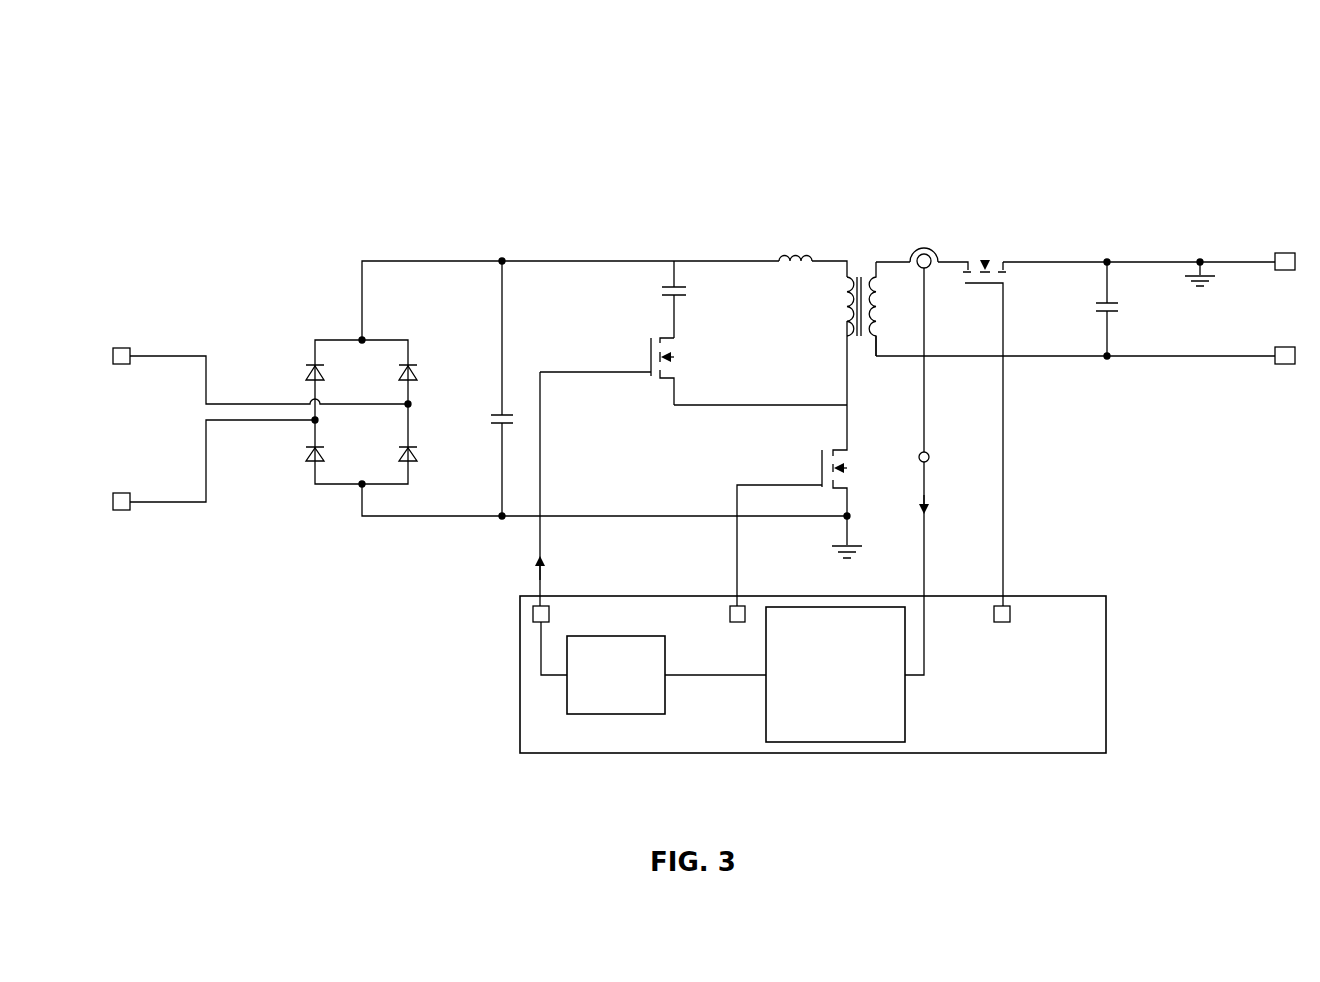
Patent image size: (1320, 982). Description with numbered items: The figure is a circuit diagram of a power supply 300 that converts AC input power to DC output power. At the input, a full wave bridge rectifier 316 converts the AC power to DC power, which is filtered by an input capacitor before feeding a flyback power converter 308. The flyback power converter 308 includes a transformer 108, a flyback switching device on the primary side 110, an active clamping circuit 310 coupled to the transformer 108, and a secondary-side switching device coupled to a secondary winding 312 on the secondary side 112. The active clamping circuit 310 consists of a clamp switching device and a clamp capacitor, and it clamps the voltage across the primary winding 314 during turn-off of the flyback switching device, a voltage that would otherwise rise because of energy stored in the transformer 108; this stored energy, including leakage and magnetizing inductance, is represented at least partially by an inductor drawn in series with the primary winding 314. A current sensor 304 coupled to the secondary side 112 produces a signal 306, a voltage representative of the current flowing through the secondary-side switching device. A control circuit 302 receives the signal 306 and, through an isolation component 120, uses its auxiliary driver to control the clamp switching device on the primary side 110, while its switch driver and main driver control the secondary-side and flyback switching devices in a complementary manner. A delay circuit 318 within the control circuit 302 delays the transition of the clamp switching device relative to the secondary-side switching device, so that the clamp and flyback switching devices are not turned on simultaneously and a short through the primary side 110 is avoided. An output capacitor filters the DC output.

The power supply 300 is at (272, 78).
The full wave bridge rectifier 316 is at (335, 325).
The flyback power converter 308 is at (728, 233).
The active clamping circuit 310 is at (632, 305).
The transformer 108 is at (859, 268).
The primary side 110 is at (816, 288).
The primary winding 314 is at (849, 330).
The current sensor 304 is at (928, 248).
The secondary side 112 is at (900, 285).
The secondary winding 312 is at (878, 332).
The signal 306 is at (929, 457).
The control circuit 302 is at (1108, 645).
The delay circuit 318 is at (652, 716).
The isolation component 120 is at (845, 745).